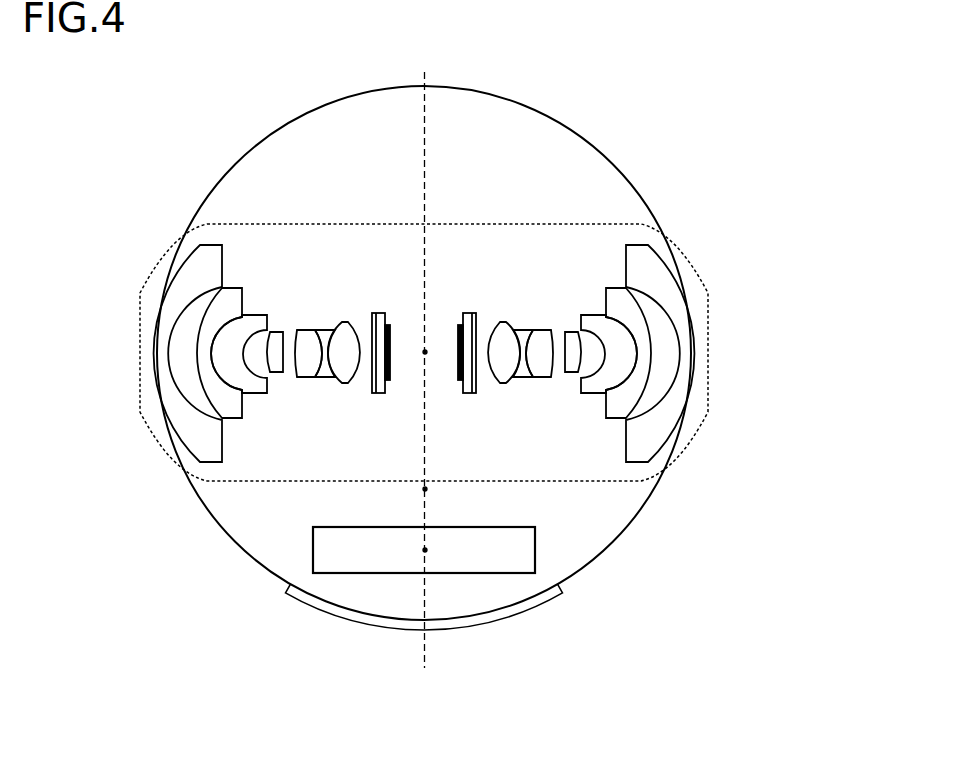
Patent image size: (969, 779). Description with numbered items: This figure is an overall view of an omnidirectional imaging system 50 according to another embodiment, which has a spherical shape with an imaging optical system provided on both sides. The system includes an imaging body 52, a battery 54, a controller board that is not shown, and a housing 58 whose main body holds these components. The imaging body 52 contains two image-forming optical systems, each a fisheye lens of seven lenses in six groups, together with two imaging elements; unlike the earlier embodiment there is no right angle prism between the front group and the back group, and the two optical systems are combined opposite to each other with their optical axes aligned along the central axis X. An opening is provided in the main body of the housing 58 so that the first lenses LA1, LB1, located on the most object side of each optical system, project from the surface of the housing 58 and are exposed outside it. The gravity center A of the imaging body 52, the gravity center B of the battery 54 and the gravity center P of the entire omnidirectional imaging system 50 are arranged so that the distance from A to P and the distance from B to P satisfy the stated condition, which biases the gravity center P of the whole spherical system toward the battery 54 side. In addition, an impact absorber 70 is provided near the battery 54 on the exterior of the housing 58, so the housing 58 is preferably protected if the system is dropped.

The omnidirectional imaging system 50 is at (129, 166).
The imaging body 52 is at (528, 224).
The battery 54 is at (537, 558).
The housing 58 is at (627, 527).
The impact absorber 70 is at (513, 601).
The first lens LA1 is at (157, 353).
The first lens LB1 is at (691, 353).
The gravity center of the imaging body A is at (425, 352).
The gravity center of the battery B is at (425, 550).
The gravity center of the entire omnidirectional imaging system P is at (425, 489).
The axis X is at (424, 385).